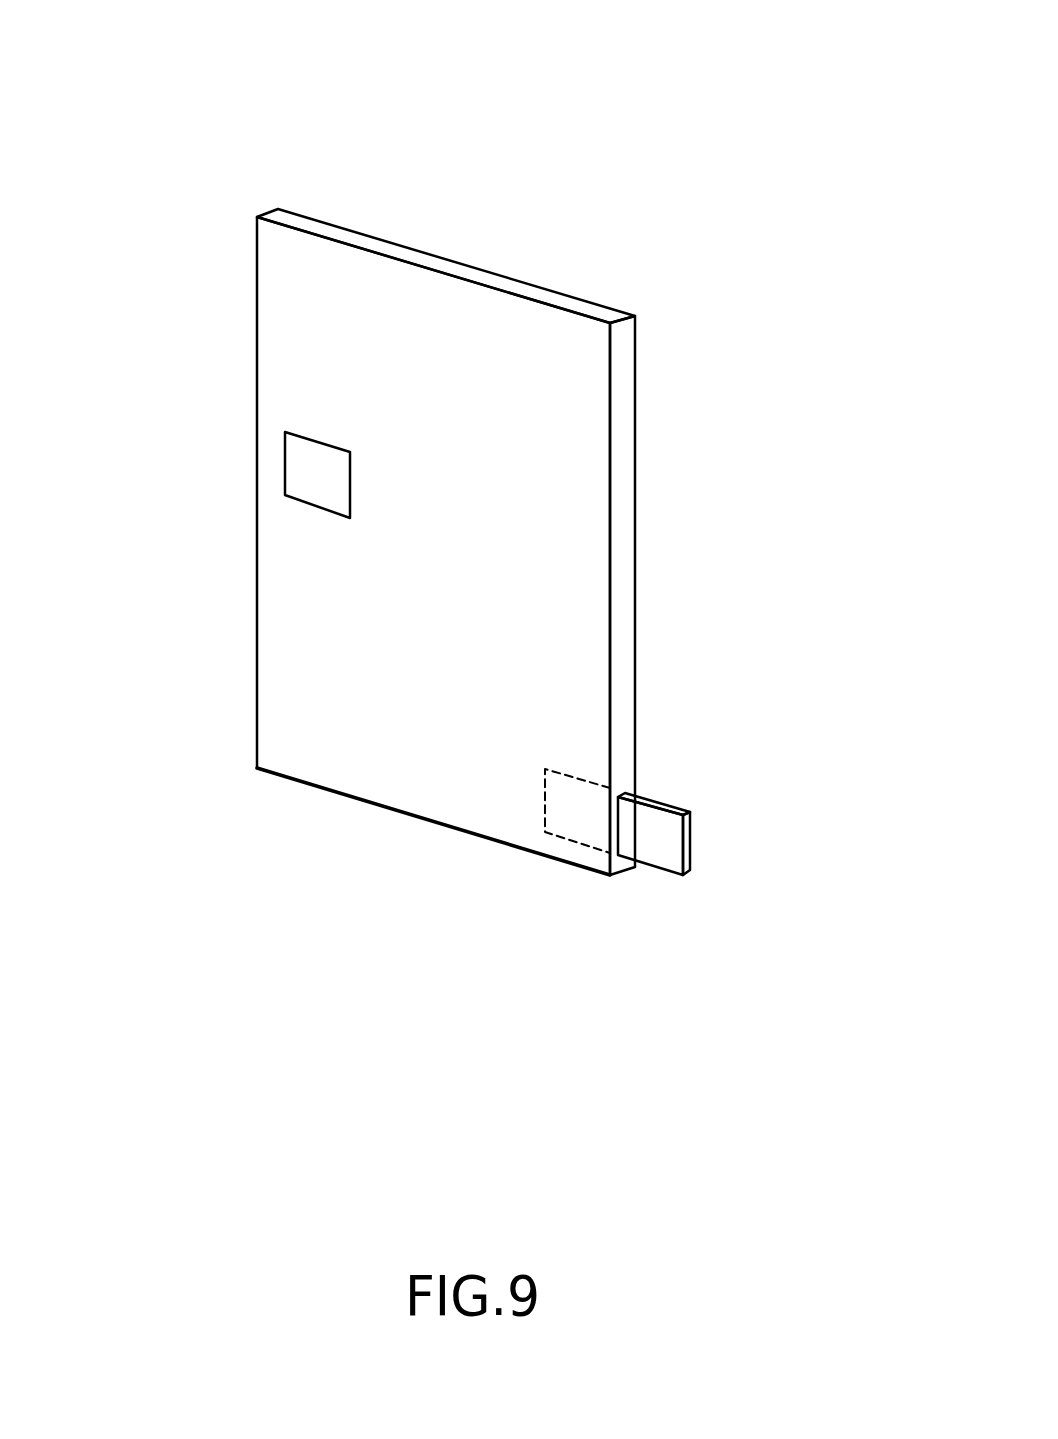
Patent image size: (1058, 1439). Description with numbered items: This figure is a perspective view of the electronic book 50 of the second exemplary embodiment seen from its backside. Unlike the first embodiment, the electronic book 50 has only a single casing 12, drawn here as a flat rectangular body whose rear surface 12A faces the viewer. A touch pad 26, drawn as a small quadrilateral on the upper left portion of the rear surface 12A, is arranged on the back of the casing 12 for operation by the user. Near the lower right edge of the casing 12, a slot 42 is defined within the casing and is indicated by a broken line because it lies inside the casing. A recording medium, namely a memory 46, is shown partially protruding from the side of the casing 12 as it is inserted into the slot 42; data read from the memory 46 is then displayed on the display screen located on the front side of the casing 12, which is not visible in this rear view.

The electronic book 50 is at (507, 509).
The casing 12 is at (568, 520).
The rear surface 12A is at (603, 572).
The touch pad 26 is at (292, 473).
The slot 42 is at (565, 840).
The recording medium (memory) 46 is at (672, 808).